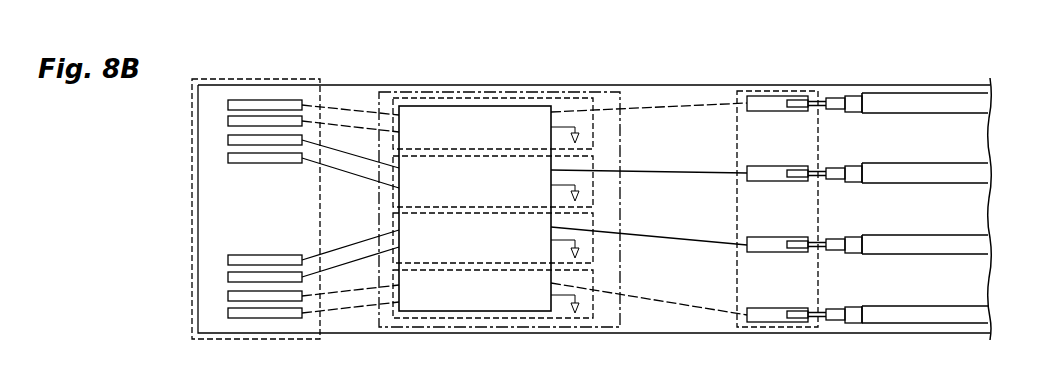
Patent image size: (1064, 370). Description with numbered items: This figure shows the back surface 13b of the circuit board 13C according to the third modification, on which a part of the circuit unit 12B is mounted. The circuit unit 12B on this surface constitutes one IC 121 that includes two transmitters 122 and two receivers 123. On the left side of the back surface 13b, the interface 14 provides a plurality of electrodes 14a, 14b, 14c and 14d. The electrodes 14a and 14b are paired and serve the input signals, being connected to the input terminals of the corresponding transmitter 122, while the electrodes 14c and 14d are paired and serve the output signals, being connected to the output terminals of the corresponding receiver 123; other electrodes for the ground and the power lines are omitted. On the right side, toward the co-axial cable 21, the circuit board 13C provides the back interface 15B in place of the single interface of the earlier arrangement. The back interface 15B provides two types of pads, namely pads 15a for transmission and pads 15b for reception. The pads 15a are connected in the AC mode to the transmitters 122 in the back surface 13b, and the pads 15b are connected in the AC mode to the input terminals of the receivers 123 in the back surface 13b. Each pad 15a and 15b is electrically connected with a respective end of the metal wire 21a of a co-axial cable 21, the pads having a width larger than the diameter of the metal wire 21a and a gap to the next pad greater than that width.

The interface 14 is at (267, 79).
The electrode 14a is at (287, 104).
The electrode 14b is at (241, 121).
The electrode 14c is at (281, 260).
The electrode 14d is at (245, 277).
The IC 121 is at (412, 106).
The transmitter 122 is at (493, 152).
The receiver 123 is at (493, 265).
The circuit unit 12B is at (602, 92).
The circuit board 13C is at (706, 85).
The back surface 13b is at (656, 100).
The back interface 15B is at (765, 91).
The pad 15a is at (765, 108).
The pad 15b is at (762, 250).
The metal wire 21a is at (800, 103).
The co-axial cable 21 is at (937, 103).